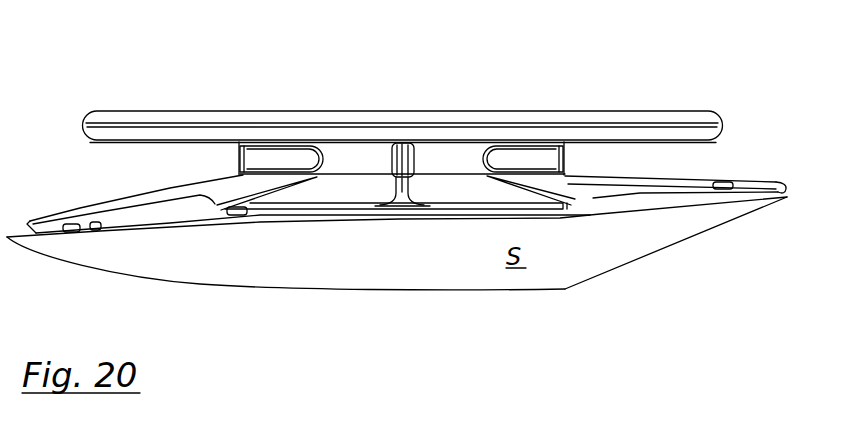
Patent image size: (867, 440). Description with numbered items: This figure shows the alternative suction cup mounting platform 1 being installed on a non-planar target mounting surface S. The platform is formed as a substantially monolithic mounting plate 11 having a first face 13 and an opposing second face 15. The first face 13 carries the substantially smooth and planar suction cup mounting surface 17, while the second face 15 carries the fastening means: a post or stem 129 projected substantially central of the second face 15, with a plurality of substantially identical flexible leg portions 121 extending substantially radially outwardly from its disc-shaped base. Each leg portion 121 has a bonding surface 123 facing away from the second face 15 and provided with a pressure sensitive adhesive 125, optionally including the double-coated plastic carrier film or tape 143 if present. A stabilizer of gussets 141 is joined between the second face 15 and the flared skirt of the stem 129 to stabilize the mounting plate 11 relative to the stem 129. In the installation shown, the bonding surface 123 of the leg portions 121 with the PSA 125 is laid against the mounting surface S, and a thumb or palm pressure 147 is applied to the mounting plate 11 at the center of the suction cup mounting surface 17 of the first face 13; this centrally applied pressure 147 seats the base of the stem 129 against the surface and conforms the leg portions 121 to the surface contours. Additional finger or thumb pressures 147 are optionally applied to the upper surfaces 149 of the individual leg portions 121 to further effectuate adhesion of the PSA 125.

The alternative suction cup mounting platform 1 is at (686, 53).
The mounting plate 11 is at (687, 110).
The first face 13 is at (603, 110).
The second face 15 is at (359, 136).
The suction cup mounting surface 17 is at (421, 113).
The flexible leg portions 121 is at (767, 181).
The bonding surface 123 is at (667, 200).
The pressure sensitive adhesive 125 is at (637, 200).
The post or stem 129 is at (447, 158).
The stabilizer gussets 141 is at (390, 157).
The carrier film or tape 143 is at (735, 192).
The pressure 147 is at (402, 105).
The upper surfaces of the leg portions 149 is at (58, 200).